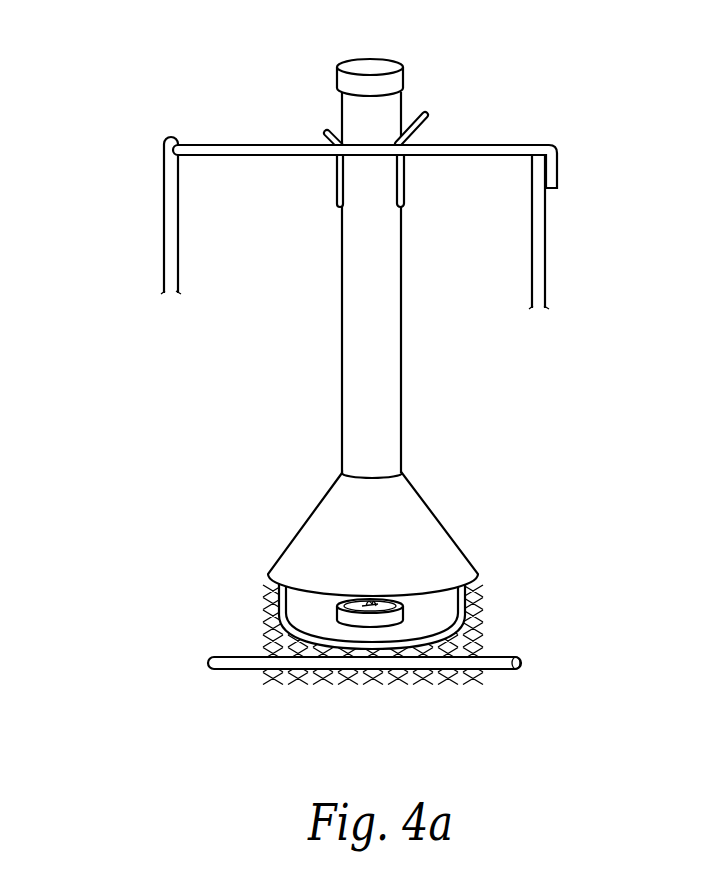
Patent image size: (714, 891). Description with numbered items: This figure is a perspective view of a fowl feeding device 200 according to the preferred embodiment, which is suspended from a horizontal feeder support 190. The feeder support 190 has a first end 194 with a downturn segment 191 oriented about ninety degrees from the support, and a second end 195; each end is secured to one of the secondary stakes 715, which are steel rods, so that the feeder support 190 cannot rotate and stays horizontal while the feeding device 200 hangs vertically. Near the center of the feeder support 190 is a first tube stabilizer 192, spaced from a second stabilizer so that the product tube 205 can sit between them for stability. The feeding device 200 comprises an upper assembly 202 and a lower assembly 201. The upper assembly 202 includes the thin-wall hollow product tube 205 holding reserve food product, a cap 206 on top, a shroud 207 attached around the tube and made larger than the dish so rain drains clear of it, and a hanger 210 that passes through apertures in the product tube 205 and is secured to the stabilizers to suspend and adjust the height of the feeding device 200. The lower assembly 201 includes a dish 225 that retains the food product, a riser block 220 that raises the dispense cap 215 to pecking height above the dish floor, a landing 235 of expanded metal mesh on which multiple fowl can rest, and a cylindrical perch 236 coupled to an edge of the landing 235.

The fowl feeding device 200 is at (130, 106).
The lower assembly 201 is at (258, 521).
The upper assembly 202 is at (140, 289).
The feeder support 190 is at (484, 131).
The downturn segment 191 is at (557, 165).
The first tube stabilizer 192 is at (425, 110).
The first end 194 is at (518, 145).
The second end 195 is at (285, 143).
The secondary stakes 715 is at (163, 228).
The hanger 210 is at (335, 180).
The product tube 205 is at (352, 300).
The cap 206 is at (363, 65).
The shroud 207 is at (352, 544).
The dispense cap 215 is at (404, 612).
The riser block 220 is at (350, 600).
The dish 225 is at (288, 618).
The landing 235 is at (478, 623).
The perch 236 is at (495, 658).